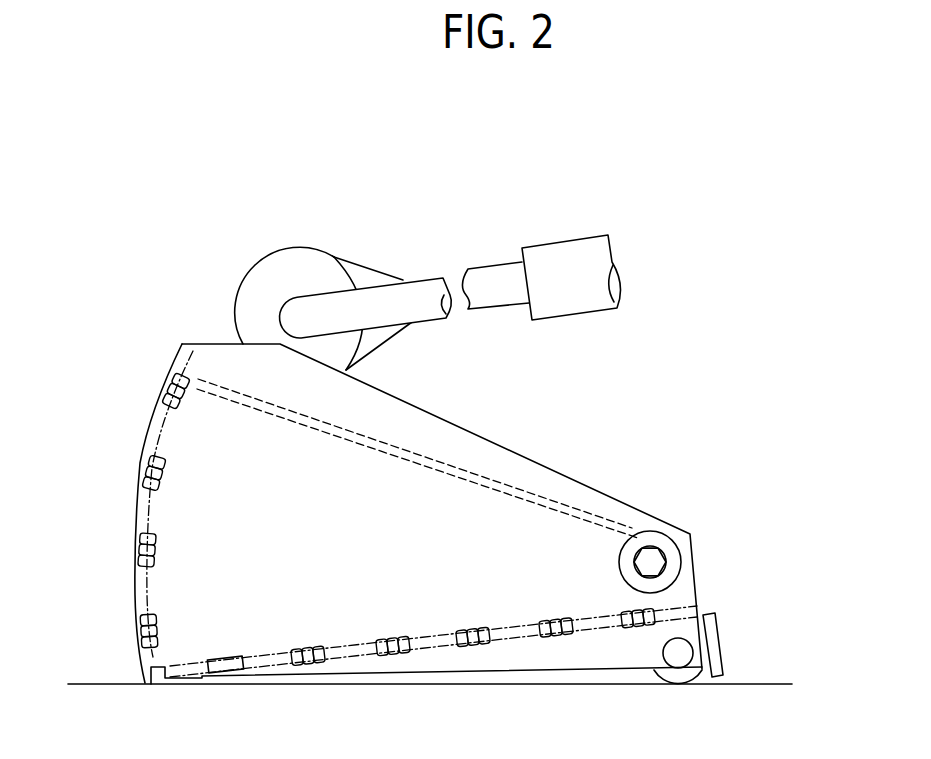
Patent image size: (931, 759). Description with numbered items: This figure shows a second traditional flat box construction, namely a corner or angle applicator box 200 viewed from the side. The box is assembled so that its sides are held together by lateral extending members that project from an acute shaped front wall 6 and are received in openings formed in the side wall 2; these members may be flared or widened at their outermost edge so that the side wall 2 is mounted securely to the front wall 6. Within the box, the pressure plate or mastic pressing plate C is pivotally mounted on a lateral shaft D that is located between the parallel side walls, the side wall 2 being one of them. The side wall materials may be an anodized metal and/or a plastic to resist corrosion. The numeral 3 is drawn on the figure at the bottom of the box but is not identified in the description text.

The corner or angle applicator box 200 is at (725, 363).
The side wall 2 is at (585, 484).
The pressure plate or mastic pressing plate C is at (511, 478).
The lateral shaft D is at (653, 560).
The front wall 6 is at (132, 515).
The bottom plate 3 is at (350, 687).